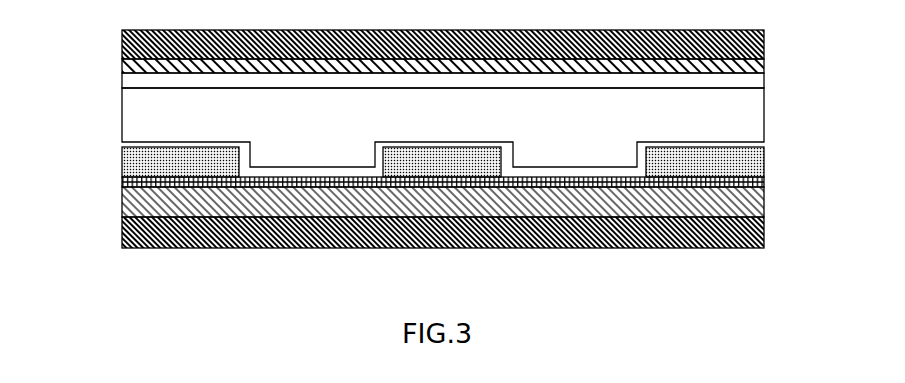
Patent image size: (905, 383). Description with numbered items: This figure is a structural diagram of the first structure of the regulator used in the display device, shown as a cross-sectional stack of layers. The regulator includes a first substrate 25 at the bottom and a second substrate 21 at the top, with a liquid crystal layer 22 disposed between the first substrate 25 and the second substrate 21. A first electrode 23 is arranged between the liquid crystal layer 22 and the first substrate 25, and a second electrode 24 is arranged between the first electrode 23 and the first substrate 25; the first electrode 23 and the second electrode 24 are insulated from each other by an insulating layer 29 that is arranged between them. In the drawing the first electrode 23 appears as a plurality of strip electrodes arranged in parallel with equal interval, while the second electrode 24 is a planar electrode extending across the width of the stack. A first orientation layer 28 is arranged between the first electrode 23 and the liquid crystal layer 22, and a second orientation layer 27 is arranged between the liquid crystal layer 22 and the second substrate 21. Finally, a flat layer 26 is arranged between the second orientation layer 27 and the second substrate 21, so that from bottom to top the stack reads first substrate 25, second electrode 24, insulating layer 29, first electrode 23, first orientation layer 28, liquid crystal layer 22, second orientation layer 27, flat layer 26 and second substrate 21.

The second substrate 21 is at (764, 43).
The liquid crystal layer 22 is at (764, 117).
The first electrode 23 is at (764, 162).
The second electrode 24 is at (764, 200).
The first substrate 25 is at (764, 229).
The flat layer 26 is at (122, 69).
The second orientation layer 27 is at (122, 85).
The first orientation layer 28 is at (122, 145).
The insulating layer 29 is at (122, 181).